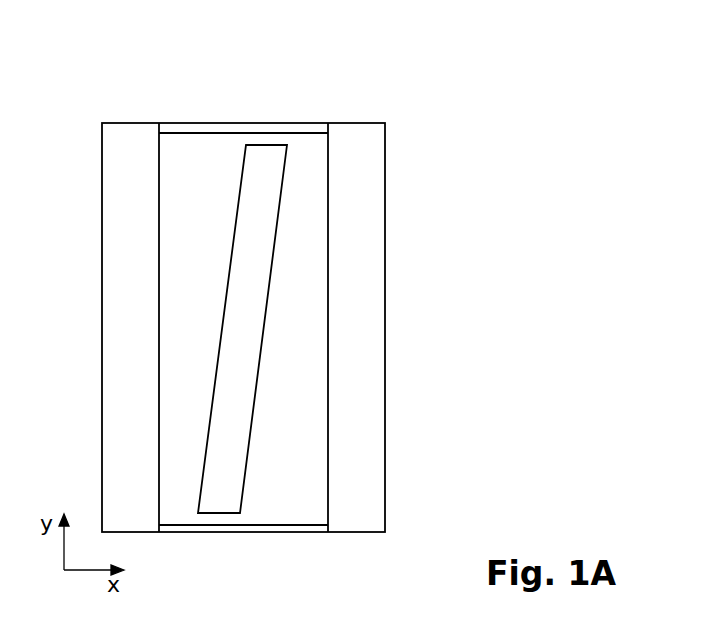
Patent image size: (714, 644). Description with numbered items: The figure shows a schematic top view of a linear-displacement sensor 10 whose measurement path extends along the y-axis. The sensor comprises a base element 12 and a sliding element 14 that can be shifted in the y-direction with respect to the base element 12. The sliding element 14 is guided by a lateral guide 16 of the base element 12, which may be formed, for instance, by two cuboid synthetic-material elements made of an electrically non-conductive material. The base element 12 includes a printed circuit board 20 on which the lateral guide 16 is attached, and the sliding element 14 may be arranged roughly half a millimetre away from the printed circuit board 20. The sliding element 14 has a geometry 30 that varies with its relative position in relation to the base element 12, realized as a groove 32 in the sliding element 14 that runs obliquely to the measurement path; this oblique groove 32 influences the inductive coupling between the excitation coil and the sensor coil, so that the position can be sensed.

The linear-displacement sensor 10 is at (265, 315).
The base element 12 is at (102, 172).
The sliding element 14 is at (201, 140).
The lateral guide 16 is at (131, 137).
The printed circuit board 20 is at (300, 128).
The geometry 30 is at (217, 508).
The groove 32 is at (238, 335).